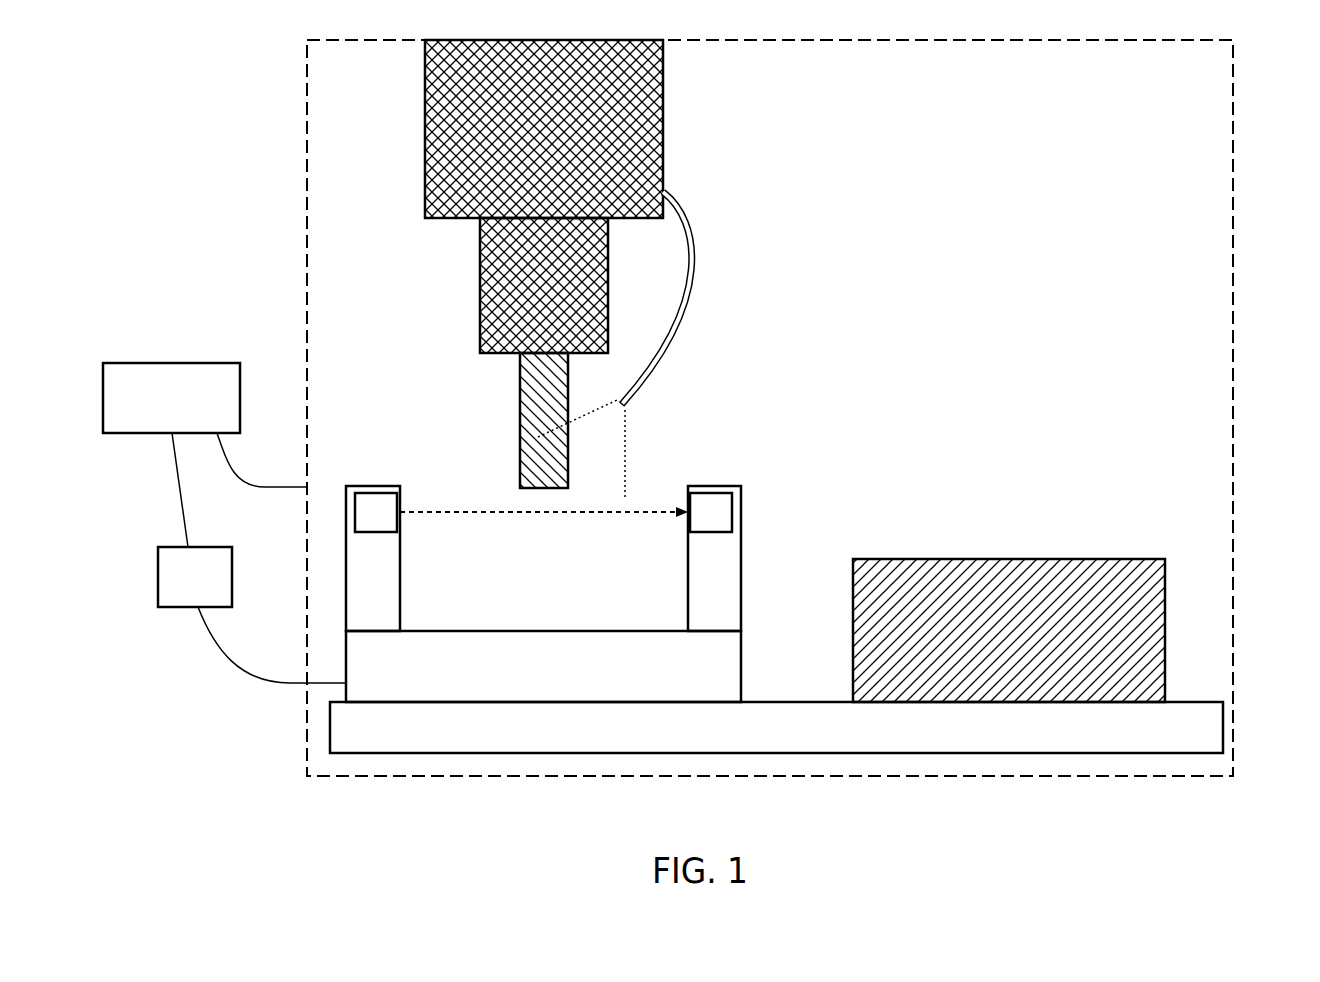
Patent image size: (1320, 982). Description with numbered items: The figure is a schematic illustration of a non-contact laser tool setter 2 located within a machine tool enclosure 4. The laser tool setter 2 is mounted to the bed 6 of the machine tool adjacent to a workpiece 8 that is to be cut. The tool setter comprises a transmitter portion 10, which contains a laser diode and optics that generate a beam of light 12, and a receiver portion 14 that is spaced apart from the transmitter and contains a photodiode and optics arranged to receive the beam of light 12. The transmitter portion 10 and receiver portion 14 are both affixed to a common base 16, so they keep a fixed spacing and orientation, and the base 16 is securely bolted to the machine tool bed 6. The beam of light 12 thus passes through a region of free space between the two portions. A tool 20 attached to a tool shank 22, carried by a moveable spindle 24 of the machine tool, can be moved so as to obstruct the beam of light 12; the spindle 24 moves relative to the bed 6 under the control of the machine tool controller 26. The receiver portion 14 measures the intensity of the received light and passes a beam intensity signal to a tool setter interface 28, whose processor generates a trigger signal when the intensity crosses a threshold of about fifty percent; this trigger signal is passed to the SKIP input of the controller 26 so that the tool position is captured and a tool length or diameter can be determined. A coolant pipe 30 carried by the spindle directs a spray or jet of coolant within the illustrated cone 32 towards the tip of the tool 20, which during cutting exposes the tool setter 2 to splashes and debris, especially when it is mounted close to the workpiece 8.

The laser tool setter 2 is at (589, 589).
The machine tool enclosure 4 is at (1233, 283).
The bed 6 is at (790, 701).
The workpiece 8 is at (1018, 645).
The transmitter portion 10 is at (401, 572).
The beam of light 12 is at (467, 513).
The receiver portion 14 is at (703, 577).
The base 16 is at (558, 687).
The tool 20 is at (520, 405).
The tool shank 22 is at (480, 315).
The spindle 24 is at (425, 155).
The machine tool controller 26 is at (189, 413).
The tool setter interface 28 is at (213, 592).
The coolant pipe 30 is at (702, 283).
The cone 32 is at (627, 457).